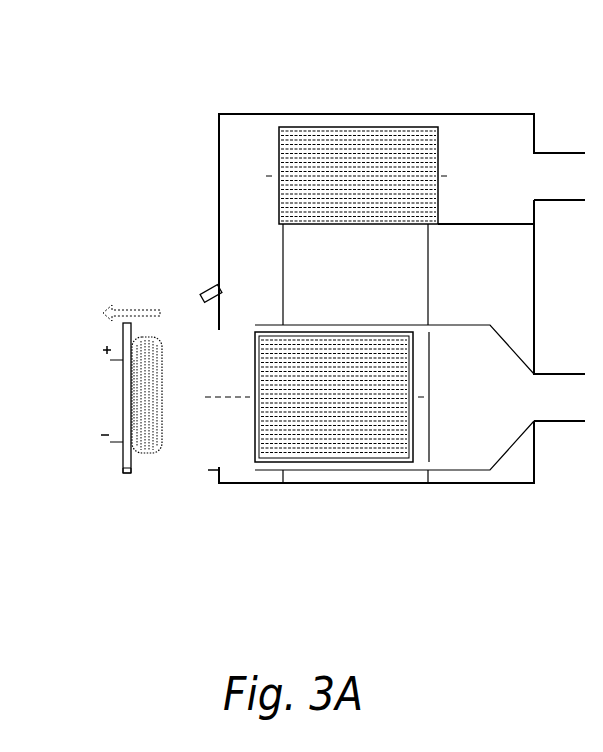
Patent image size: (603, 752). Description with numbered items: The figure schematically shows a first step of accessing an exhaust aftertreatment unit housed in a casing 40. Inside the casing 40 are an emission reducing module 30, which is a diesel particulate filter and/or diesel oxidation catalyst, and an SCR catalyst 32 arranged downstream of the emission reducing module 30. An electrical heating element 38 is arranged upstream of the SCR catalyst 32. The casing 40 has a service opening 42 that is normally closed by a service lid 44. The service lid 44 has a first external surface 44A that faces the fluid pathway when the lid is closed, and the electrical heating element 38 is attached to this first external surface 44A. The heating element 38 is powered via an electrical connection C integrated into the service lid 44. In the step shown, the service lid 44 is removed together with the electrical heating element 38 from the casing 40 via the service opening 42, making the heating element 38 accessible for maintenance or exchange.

The emission reducing module 30 is at (341, 462).
The SCR catalyst 32 is at (352, 127).
The electrical heating element 38 is at (160, 455).
The casing 40 is at (270, 483).
The service opening 42 is at (199, 345).
The service lid 44 is at (128, 323).
The first external surface 44A is at (137, 476).
The electrical connection C is at (103, 455).